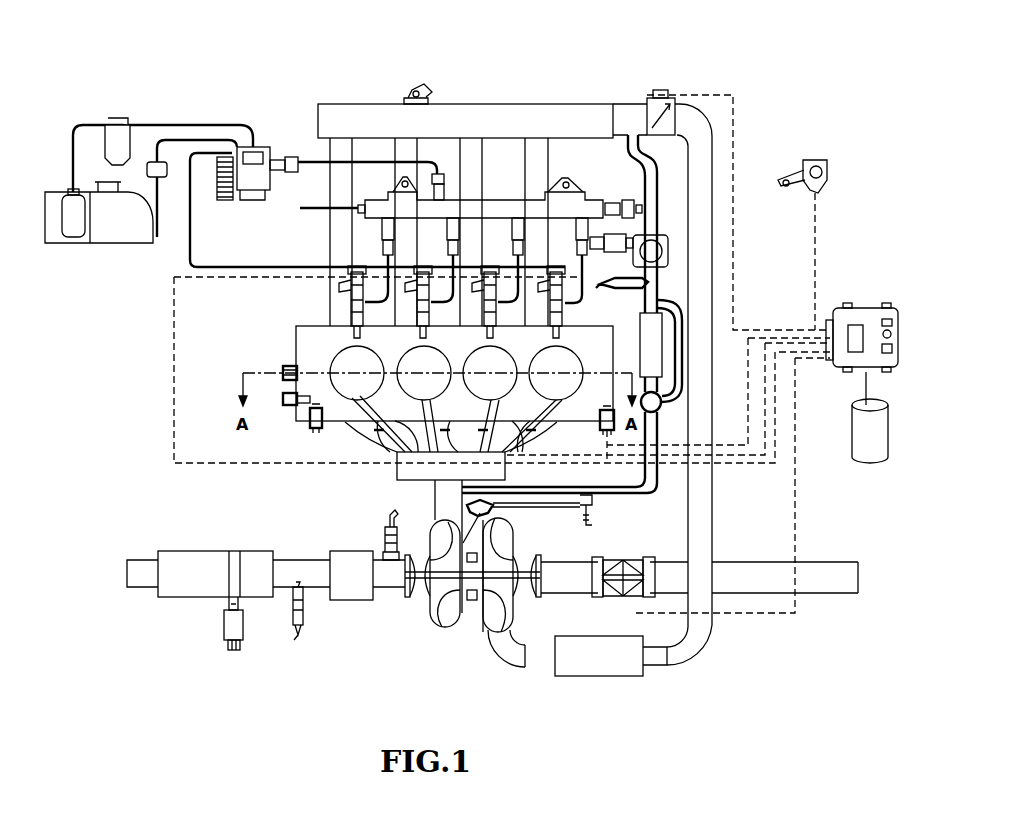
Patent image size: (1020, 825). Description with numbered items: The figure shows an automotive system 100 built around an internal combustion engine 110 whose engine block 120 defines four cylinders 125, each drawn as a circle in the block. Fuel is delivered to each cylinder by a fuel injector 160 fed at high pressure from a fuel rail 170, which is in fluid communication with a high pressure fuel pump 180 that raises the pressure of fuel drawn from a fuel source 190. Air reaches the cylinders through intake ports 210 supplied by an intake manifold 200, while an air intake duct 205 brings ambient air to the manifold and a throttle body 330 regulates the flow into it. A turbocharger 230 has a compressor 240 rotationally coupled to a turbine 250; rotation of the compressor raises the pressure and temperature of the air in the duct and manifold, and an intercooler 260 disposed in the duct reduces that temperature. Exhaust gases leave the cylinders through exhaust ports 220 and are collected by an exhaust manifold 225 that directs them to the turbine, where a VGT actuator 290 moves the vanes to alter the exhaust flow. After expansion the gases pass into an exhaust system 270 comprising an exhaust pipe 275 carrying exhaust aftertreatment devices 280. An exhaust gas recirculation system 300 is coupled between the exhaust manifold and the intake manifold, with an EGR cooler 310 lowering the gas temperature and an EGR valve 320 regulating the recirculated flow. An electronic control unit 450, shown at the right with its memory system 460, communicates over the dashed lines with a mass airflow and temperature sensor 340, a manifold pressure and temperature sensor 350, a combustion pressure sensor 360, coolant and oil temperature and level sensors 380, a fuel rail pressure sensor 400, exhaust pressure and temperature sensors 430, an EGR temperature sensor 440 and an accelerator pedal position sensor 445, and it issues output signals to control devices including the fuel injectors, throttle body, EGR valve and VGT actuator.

The automotive system 100 is at (233, 86).
The internal combustion engine 110 is at (566, 96).
The engine block 120 is at (296, 333).
The cylinder 125 is at (560, 362).
The fuel injector 160 is at (342, 307).
The fuel rail 170 is at (355, 213).
The high pressure fuel pump 180 is at (268, 150).
The fuel source 190 is at (120, 228).
The intake manifold 200 is at (475, 122).
The air intake duct 205 is at (703, 533).
The intake port 210 is at (340, 328).
The exhaust port 220 is at (355, 422).
The exhaust manifold 225 is at (420, 473).
The turbocharger 230 is at (438, 630).
The compressor 240 is at (497, 595).
The turbine 250 is at (430, 600).
The intercooler 260 is at (622, 650).
The exhaust system 270 is at (198, 532).
The exhaust pipe 275 is at (140, 577).
The exhaust aftertreatment device 280 is at (185, 575).
The VGT actuator 290 is at (495, 510).
The exhaust gas recirculation system 300 is at (624, 503).
The EGR cooler 310 is at (651, 362).
The EGR valve 320 is at (656, 228).
The throttle body 330 is at (661, 88).
The mass airflow and temperature sensor 340 is at (612, 597).
The manifold pressure and temperature sensor 350 is at (410, 90).
The combustion pressure sensor 360 is at (368, 428).
The coolant and oil temperature and level sensors 380 is at (314, 420).
The fuel rail pressure sensor 400 is at (640, 205).
The exhaust pressure and temperature sensors 430 is at (300, 640).
The EGR temperature sensor 440 is at (654, 273).
The accelerator pedal position sensor 445 is at (818, 160).
The electronic control unit 450 is at (866, 308).
The memory system 460 is at (871, 450).